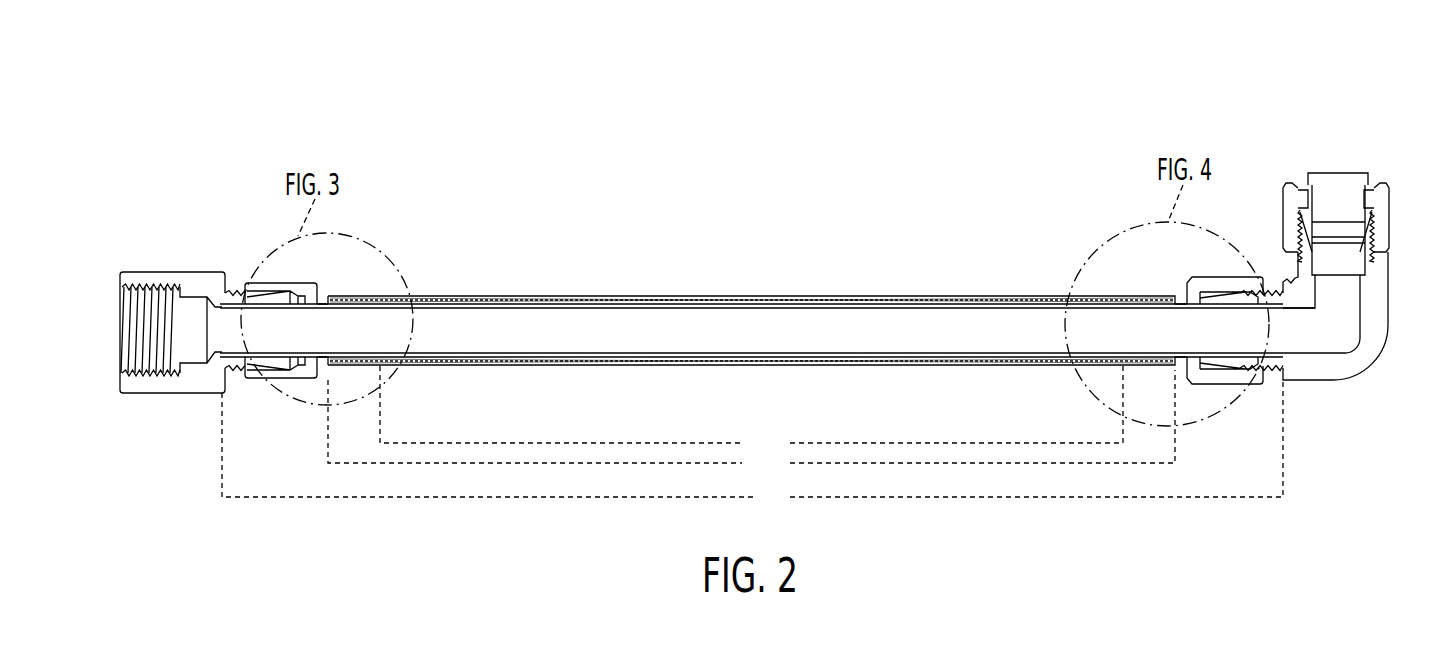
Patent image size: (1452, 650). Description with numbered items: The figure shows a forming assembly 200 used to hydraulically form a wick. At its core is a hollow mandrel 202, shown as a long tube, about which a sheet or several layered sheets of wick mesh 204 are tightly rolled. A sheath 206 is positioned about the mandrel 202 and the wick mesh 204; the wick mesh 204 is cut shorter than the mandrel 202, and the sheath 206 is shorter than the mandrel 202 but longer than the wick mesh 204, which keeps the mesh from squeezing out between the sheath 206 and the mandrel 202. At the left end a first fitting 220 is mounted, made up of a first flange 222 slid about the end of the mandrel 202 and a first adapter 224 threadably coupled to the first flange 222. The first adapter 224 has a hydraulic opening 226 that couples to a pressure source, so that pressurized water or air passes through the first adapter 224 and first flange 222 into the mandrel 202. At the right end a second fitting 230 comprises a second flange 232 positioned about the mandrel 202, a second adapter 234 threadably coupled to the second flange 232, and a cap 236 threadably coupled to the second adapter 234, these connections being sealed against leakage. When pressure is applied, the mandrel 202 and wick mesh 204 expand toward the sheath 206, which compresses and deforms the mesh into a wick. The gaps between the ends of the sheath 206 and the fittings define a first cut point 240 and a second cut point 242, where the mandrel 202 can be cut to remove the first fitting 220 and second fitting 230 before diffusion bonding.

The forming assembly 200 is at (930, 80).
The mandrel 202 is at (728, 308).
The wick mesh 204 is at (580, 300).
The sheath 206 is at (512, 296).
The first fitting 220 is at (190, 246).
The first flange 222 is at (272, 288).
The first adapter 224 is at (158, 272).
The hydraulic opening 226 is at (120, 312).
The second fitting 230 is at (1396, 150).
The second flange 232 is at (1228, 280).
The second adapter 234 is at (1345, 172).
The cap 236 is at (1390, 204).
The first cut point 240 is at (330, 284).
The second cut point 242 is at (1168, 284).